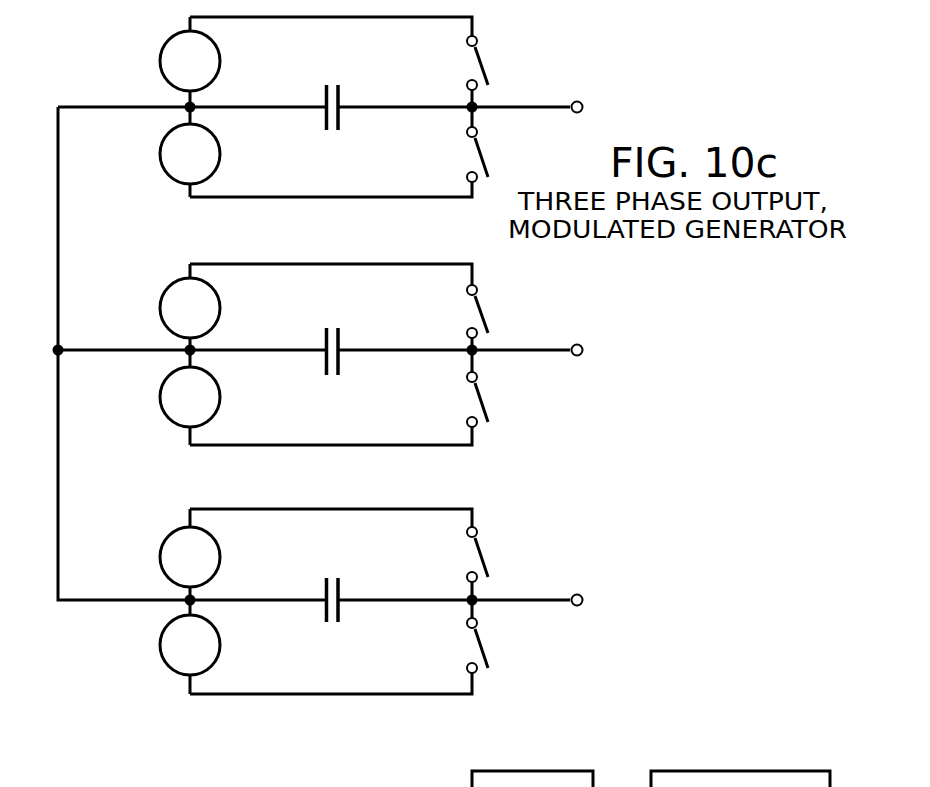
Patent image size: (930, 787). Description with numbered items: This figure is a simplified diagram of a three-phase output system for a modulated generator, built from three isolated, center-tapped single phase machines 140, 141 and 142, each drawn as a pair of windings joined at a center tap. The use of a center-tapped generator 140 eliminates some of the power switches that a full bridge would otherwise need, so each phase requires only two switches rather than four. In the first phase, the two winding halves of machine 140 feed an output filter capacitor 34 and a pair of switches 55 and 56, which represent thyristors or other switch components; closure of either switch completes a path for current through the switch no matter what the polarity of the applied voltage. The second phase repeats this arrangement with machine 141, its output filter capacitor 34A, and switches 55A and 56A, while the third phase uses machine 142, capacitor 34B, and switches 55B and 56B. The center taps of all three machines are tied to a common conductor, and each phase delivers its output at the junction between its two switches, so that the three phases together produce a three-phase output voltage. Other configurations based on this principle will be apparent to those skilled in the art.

The center-tapped generator 140 is at (157, 137).
The center-tapped single phase machine 141 is at (158, 378).
The center-tapped single phase machine 142 is at (157, 561).
The output filter capacitor 34 is at (324, 94).
The output filter capacitor 34A is at (324, 337).
The output filter capacitor 34B is at (324, 617).
The mechanical switch 55 is at (493, 63).
The mechanical switch 56 is at (493, 154).
The mechanical switch 55A is at (501, 311).
The mechanical switch 56A is at (501, 399).
The mechanical switch 55B is at (500, 554).
The mechanical switch 56B is at (500, 645).